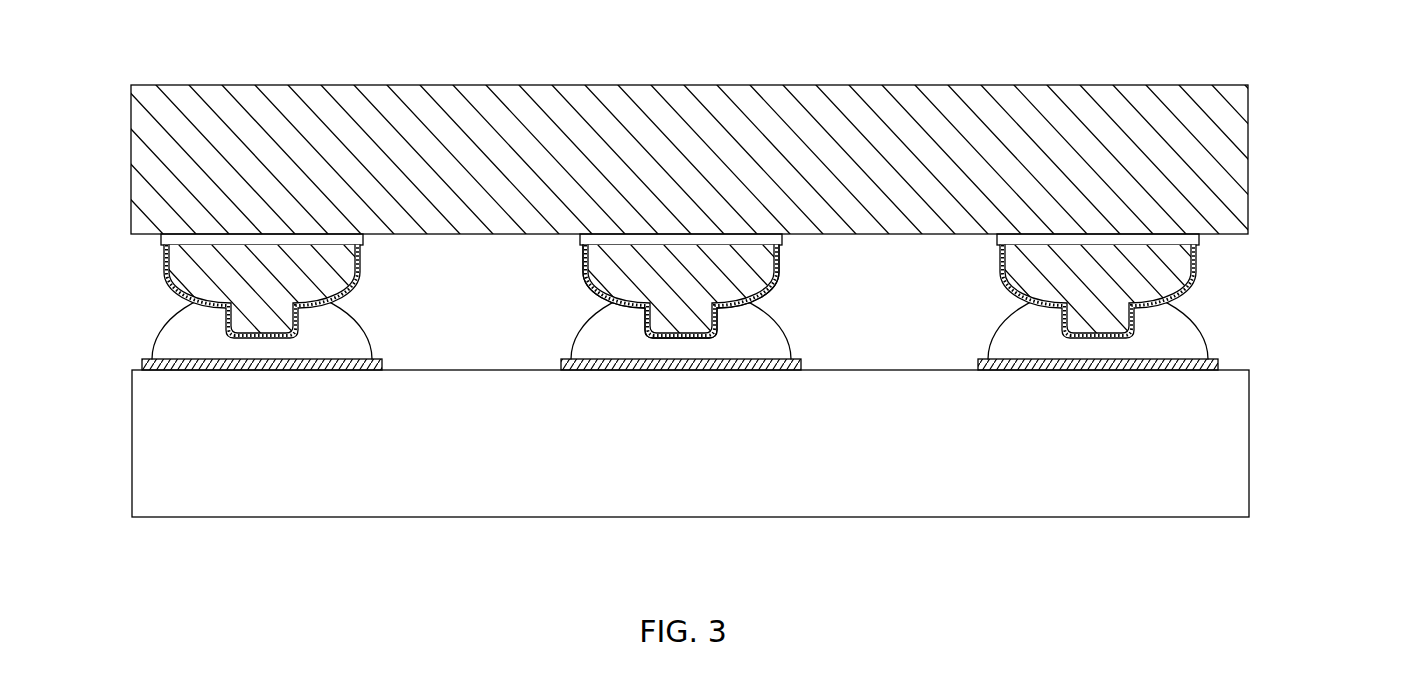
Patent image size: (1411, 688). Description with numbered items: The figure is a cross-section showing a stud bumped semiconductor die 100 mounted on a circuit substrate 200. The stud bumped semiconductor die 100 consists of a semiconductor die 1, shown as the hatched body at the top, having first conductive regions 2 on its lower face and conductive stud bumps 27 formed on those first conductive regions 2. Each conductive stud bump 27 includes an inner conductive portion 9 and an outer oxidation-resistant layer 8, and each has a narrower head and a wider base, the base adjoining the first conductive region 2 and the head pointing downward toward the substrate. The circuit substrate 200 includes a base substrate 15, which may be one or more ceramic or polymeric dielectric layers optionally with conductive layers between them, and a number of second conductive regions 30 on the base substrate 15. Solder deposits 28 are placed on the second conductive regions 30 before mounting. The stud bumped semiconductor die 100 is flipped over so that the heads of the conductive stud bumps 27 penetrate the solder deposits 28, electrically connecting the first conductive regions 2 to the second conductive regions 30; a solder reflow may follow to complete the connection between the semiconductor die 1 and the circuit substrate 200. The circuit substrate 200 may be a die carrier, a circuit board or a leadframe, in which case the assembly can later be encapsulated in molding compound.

The semiconductor die 1 is at (136, 144).
The first conductive regions 2 is at (783, 239).
The outer oxidation-resistant layer 8 is at (584, 262).
The inner conductive portion 9 is at (784, 279).
The base substrate 15 is at (716, 470).
The conductive stud bumps 27 is at (672, 196).
The solder deposits 28 is at (768, 329).
The second conductive regions 30 is at (801, 362).
The stud bumped semiconductor die 100 is at (1288, 156).
The circuit substrate 200 is at (1290, 441).